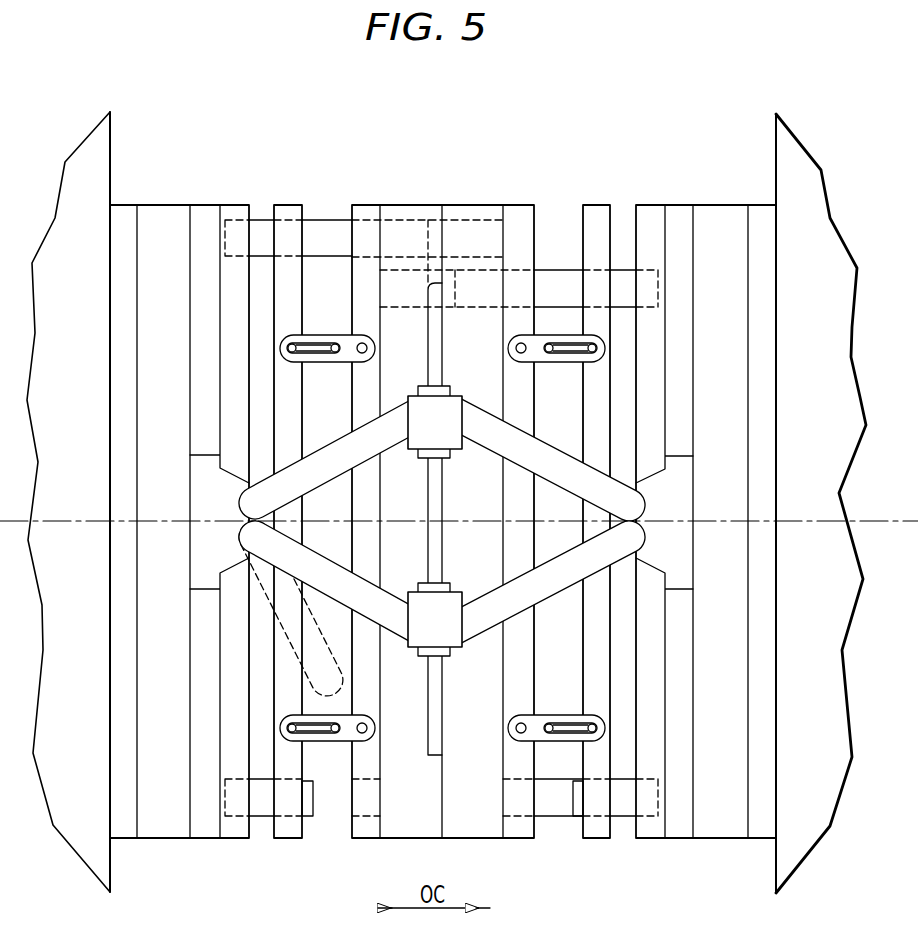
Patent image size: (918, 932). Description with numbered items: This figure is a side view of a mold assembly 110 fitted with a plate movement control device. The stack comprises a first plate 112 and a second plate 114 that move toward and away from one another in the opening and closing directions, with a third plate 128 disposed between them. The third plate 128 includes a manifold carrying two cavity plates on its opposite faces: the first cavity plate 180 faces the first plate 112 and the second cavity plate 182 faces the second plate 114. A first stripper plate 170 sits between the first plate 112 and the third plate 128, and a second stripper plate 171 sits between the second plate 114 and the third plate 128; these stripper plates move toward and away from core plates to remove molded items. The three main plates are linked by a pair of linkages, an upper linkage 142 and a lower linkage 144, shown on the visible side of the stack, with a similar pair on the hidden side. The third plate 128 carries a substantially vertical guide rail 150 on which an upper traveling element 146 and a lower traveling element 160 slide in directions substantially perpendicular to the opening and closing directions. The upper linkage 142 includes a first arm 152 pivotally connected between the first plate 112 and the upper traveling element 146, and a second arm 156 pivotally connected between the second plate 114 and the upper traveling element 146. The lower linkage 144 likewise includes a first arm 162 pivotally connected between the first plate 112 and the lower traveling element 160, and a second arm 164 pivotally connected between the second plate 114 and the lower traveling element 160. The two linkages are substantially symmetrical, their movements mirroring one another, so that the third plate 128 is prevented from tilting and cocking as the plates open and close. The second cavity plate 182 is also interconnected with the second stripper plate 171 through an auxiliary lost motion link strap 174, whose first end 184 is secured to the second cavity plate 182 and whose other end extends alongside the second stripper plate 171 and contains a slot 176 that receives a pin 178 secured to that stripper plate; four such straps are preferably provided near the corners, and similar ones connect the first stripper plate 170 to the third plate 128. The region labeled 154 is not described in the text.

The mold assembly 110 is at (608, 95).
The first plate 112 is at (138, 502).
The second plate 114 is at (680, 202).
The third plate 128 is at (430, 513).
The upper linkage 142 is at (461, 386).
The lower linkage 144 is at (453, 645).
The upper traveling element 146 is at (452, 446).
The guide rail 150 is at (425, 722).
The first arm 152 is at (318, 455).
The left recess 154 is at (197, 480).
The second arm 156 is at (547, 450).
The lower traveling element 160 is at (450, 606).
The first arm 162 is at (381, 551).
The second arm 164 is at (570, 587).
The first stripper plate 170 is at (296, 840).
The second stripper plate 171 is at (600, 840).
The lost motion link strap 174 is at (572, 742).
The slot 176 is at (568, 726).
The pin 178 is at (599, 735).
The first cavity plate 180 is at (364, 840).
The second cavity plate 182 is at (512, 840).
The first end 184 is at (521, 733).